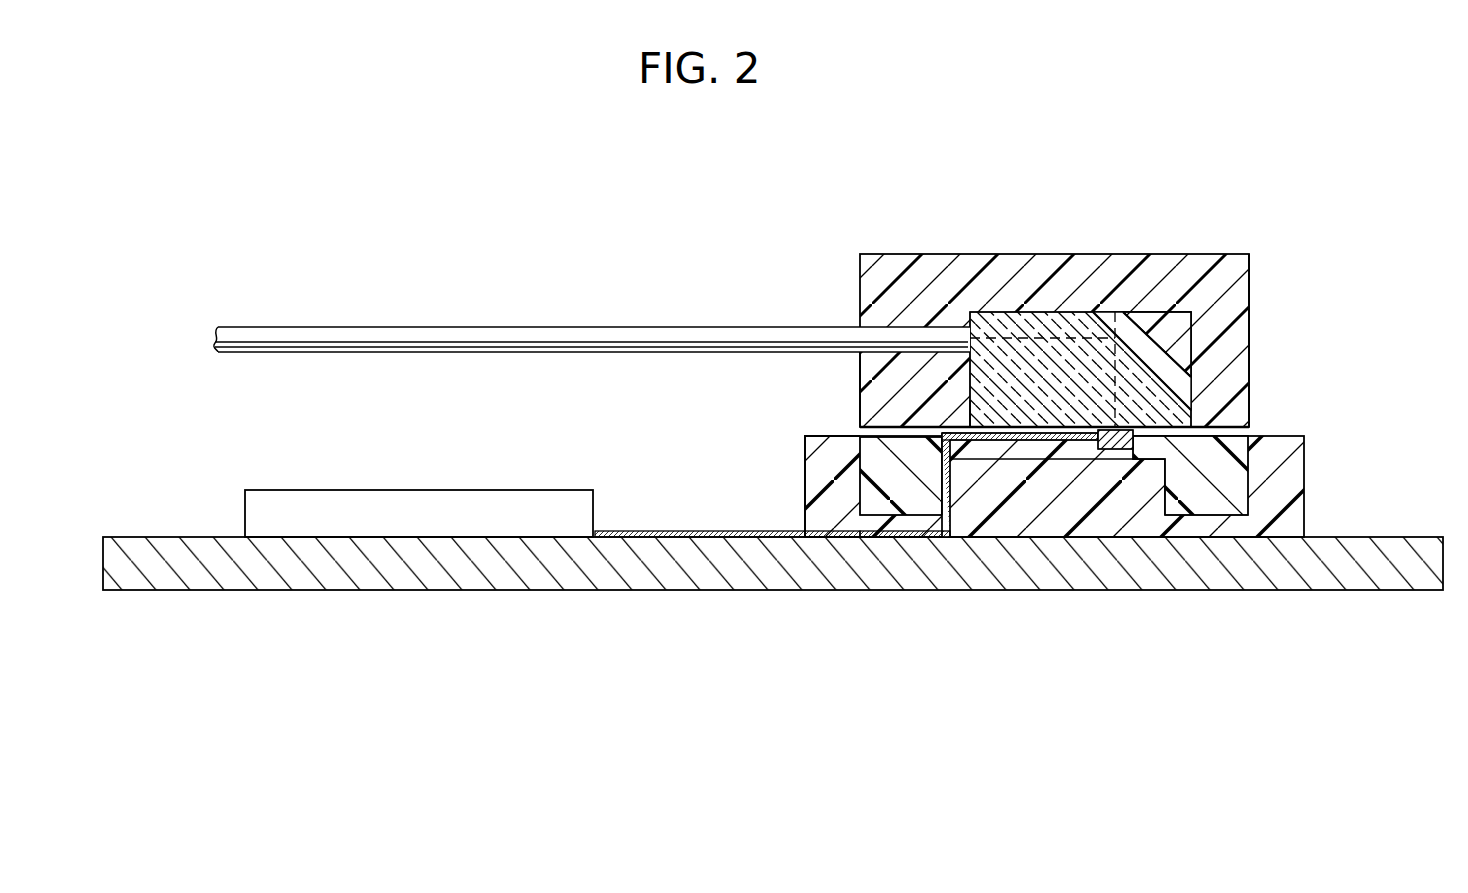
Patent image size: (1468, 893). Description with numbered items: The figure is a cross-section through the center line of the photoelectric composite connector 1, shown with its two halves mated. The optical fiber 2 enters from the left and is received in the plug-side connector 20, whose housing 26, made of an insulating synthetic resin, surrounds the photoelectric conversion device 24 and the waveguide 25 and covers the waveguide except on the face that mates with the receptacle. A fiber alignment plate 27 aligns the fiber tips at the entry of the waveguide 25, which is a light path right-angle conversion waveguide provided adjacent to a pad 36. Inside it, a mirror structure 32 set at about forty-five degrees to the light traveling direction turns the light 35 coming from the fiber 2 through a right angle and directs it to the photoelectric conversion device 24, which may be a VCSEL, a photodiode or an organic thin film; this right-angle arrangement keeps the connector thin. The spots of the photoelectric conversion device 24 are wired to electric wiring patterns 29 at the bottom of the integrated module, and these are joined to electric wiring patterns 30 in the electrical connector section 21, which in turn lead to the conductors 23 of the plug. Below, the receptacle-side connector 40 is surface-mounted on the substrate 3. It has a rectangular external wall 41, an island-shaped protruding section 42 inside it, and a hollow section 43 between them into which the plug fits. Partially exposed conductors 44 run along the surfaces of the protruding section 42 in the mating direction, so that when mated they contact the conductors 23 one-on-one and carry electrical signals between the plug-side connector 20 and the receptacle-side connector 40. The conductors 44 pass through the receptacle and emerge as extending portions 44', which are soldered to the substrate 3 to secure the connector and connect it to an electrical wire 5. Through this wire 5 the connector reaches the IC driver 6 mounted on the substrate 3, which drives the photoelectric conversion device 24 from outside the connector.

The photoelectric composite connector 1 is at (897, 160).
The optical fiber 2 is at (594, 327).
The substrate 3 is at (752, 580).
The electrical wire 5 is at (648, 528).
The IC driver 6 is at (414, 500).
The plug-side connector 20 is at (1123, 252).
The electrical connector section 21 is at (1230, 465).
The conductors 23 is at (943, 470).
The photoelectric conversion device 24 is at (1117, 448).
The waveguide 25 is at (1155, 408).
The housing 26 is at (1232, 265).
The fiber alignment plate 27 is at (868, 368).
The electric wiring patterns 29 is at (1076, 420).
The electric wiring patterns 30 is at (958, 419).
The mirror structure 32 is at (1128, 342).
The light 35 is at (1033, 325).
The pad 36 is at (1176, 368).
The receptacle-side connector 40 is at (1298, 518).
The external wall 41 is at (805, 488).
The protruding section 42 is at (1056, 522).
The hollow section 43 is at (871, 518).
The conductors 44 is at (1014, 537).
The extending portions 44' is at (905, 597).